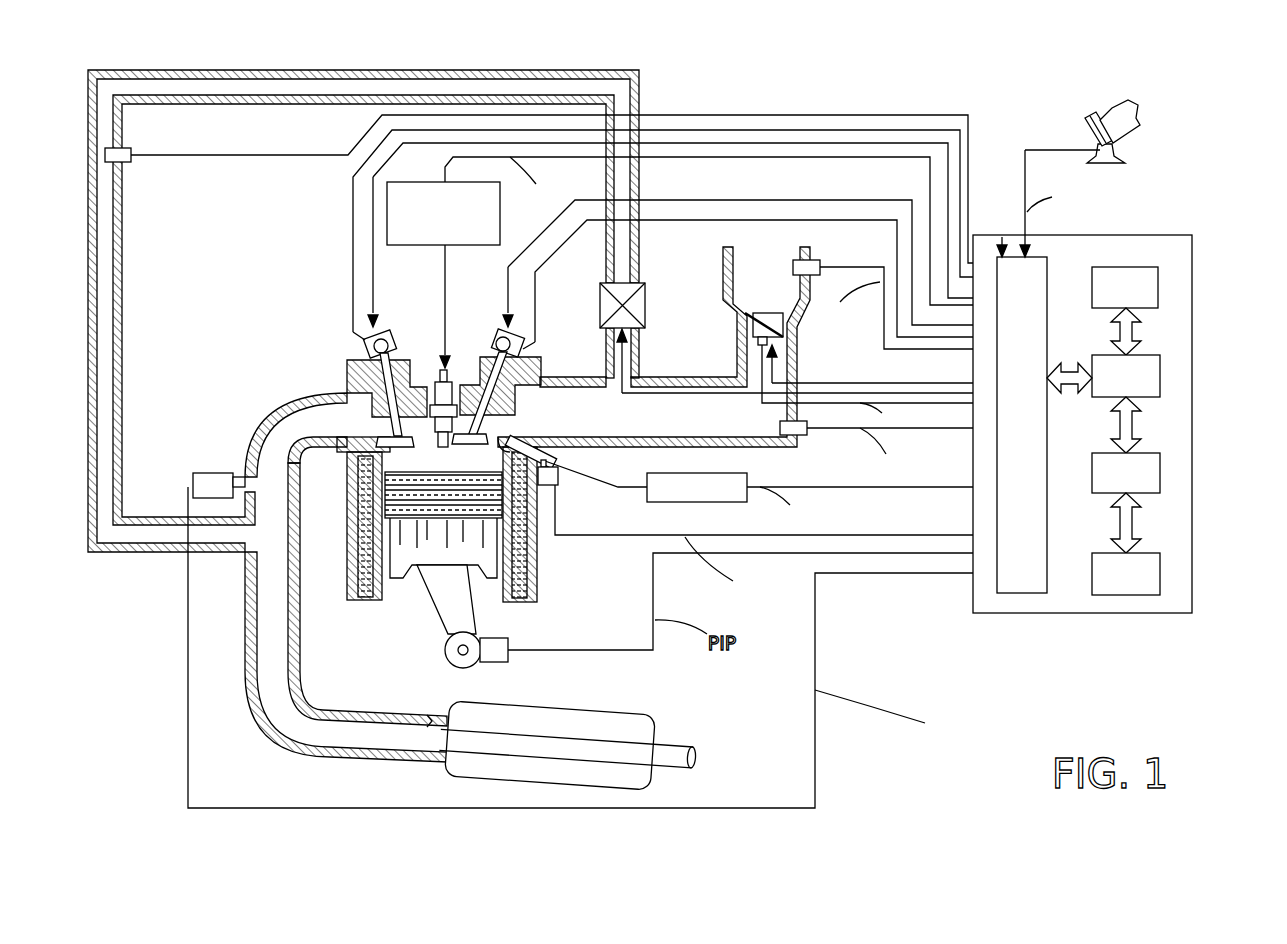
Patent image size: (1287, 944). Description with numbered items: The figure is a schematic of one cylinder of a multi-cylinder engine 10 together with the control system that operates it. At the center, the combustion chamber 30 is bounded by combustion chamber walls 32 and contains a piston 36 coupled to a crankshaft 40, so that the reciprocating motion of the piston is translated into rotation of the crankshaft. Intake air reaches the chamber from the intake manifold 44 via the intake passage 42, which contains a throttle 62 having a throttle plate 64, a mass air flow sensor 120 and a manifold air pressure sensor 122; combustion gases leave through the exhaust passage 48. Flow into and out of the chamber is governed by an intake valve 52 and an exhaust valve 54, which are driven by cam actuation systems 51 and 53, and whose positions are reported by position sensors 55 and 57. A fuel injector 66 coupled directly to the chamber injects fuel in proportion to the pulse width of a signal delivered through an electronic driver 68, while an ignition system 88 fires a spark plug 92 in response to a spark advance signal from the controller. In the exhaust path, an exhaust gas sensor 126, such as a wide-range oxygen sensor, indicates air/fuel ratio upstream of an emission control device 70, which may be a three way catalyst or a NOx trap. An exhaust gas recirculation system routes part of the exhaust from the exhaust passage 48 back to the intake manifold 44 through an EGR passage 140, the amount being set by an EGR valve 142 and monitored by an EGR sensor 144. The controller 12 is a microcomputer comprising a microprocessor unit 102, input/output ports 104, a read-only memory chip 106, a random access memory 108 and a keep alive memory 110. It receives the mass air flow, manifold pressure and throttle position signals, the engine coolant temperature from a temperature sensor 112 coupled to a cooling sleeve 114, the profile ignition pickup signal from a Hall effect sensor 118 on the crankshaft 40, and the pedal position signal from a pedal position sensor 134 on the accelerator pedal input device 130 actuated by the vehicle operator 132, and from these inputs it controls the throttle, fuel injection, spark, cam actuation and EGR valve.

The multi-cylinder engine 10 is at (256, 274).
The controller 12 is at (1183, 236).
The combustion chamber 30 is at (440, 453).
The combustion chamber walls 32 is at (387, 587).
The piston 36 is at (427, 550).
The crankshaft 40 is at (455, 668).
The intake passage 42 is at (753, 293).
The intake manifold 44 is at (609, 431).
The exhaust passage 48 is at (300, 431).
The cam actuation system 51 is at (498, 328).
The intake valve 52 is at (492, 430).
The cam actuation system 53 is at (385, 328).
The exhaust valve 54 is at (372, 398).
The position sensor 55 is at (523, 349).
The position sensor 57 is at (365, 343).
The throttle 62 is at (783, 325).
The throttle plate 64 is at (745, 318).
The fuel injector 66 is at (558, 463).
The electronic driver 68 is at (662, 502).
The emission control device 70 is at (612, 711).
The ignition system 88 is at (402, 182).
The spark plug 92 is at (445, 368).
The microprocessor unit 102 is at (1162, 371).
The input/output ports 104 is at (1048, 266).
The read-only memory chip 106 is at (1160, 283).
The random access memory 108 is at (1162, 473).
The keep alive memory 110 is at (1162, 573).
The temperature sensor 112 is at (558, 485).
The cooling sleeve 114 is at (537, 553).
The Hall effect sensor 118 is at (495, 662).
The mass air flow sensor 120 is at (820, 262).
The manifold air pressure sensor 122 is at (807, 435).
The exhaust gas sensor 126 is at (193, 476).
The input device 130 is at (1088, 129).
The vehicle operator 132 is at (1138, 113).
The pedal position sensor 134 is at (1115, 153).
The EGR passage 140 is at (358, 70).
The EGR valve 142 is at (645, 306).
The EGR sensor 144 is at (130, 162).